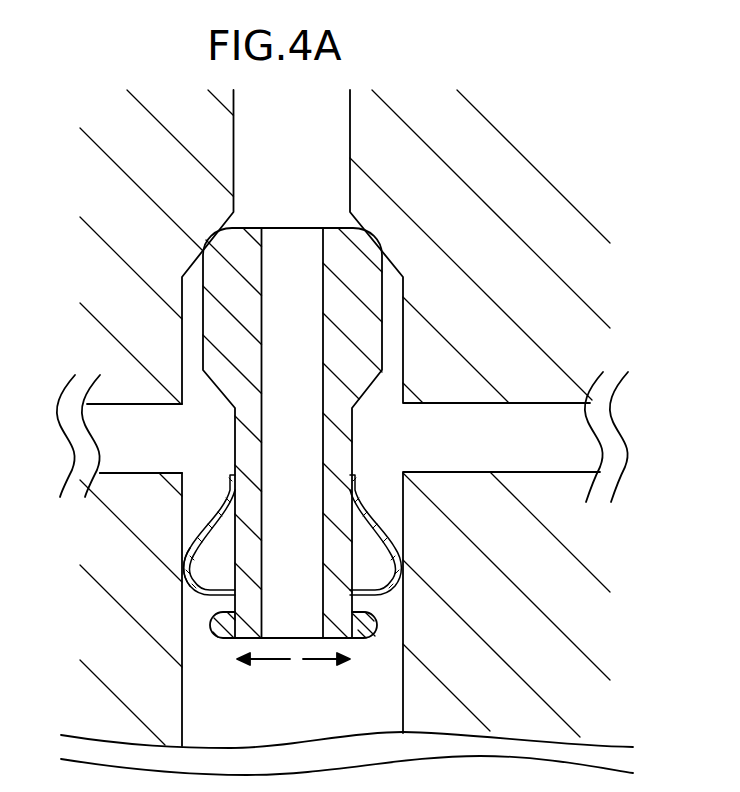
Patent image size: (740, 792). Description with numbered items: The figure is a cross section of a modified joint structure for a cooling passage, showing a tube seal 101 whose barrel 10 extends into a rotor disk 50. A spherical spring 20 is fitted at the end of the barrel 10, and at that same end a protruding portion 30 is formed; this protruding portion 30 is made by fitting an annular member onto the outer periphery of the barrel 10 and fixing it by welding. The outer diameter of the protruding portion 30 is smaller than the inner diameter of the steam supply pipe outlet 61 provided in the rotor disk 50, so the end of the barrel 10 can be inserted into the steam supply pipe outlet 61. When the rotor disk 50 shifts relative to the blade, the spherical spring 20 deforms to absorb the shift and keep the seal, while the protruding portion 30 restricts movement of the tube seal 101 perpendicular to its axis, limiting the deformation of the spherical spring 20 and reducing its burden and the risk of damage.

The barrel 10 is at (423, 410).
The spherical spring 20 is at (367, 515).
The protruding portion 30 is at (377, 627).
The rotor disk 50 is at (525, 537).
The steam supply pipe outlet 61 is at (183, 564).
The tube seal 101 is at (218, 453).